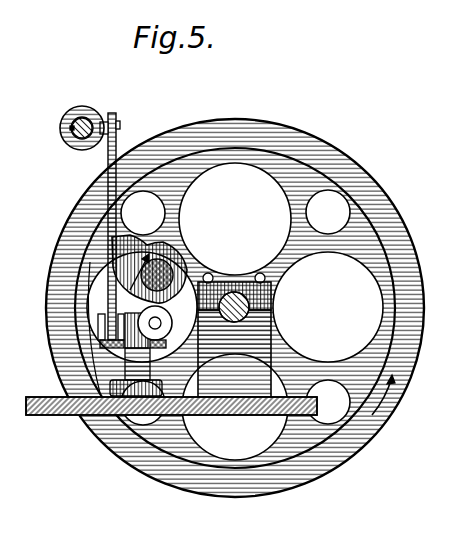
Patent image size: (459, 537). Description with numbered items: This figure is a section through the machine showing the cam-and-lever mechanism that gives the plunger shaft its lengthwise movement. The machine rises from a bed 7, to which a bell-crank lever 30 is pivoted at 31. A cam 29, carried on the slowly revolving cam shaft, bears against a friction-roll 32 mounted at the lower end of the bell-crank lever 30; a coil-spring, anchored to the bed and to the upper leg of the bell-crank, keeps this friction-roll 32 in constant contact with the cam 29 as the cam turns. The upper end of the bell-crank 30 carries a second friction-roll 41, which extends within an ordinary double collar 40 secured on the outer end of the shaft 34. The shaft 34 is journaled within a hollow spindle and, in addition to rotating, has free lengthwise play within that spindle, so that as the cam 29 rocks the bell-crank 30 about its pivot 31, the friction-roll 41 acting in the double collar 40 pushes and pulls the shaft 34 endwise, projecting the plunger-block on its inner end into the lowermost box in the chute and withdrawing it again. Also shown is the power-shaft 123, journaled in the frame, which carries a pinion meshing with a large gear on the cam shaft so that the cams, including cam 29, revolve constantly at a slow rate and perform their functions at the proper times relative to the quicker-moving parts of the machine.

The bed 7 is at (220, 400).
The cam 29 is at (126, 245).
The bell-crank lever 30 is at (107, 288).
The pivot 31 is at (107, 334).
The friction-roll 32 is at (160, 340).
The shaft 34 is at (98, 118).
The double collar 40 is at (78, 116).
The friction-roll 41 is at (117, 138).
The power-shaft 123 is at (250, 313).